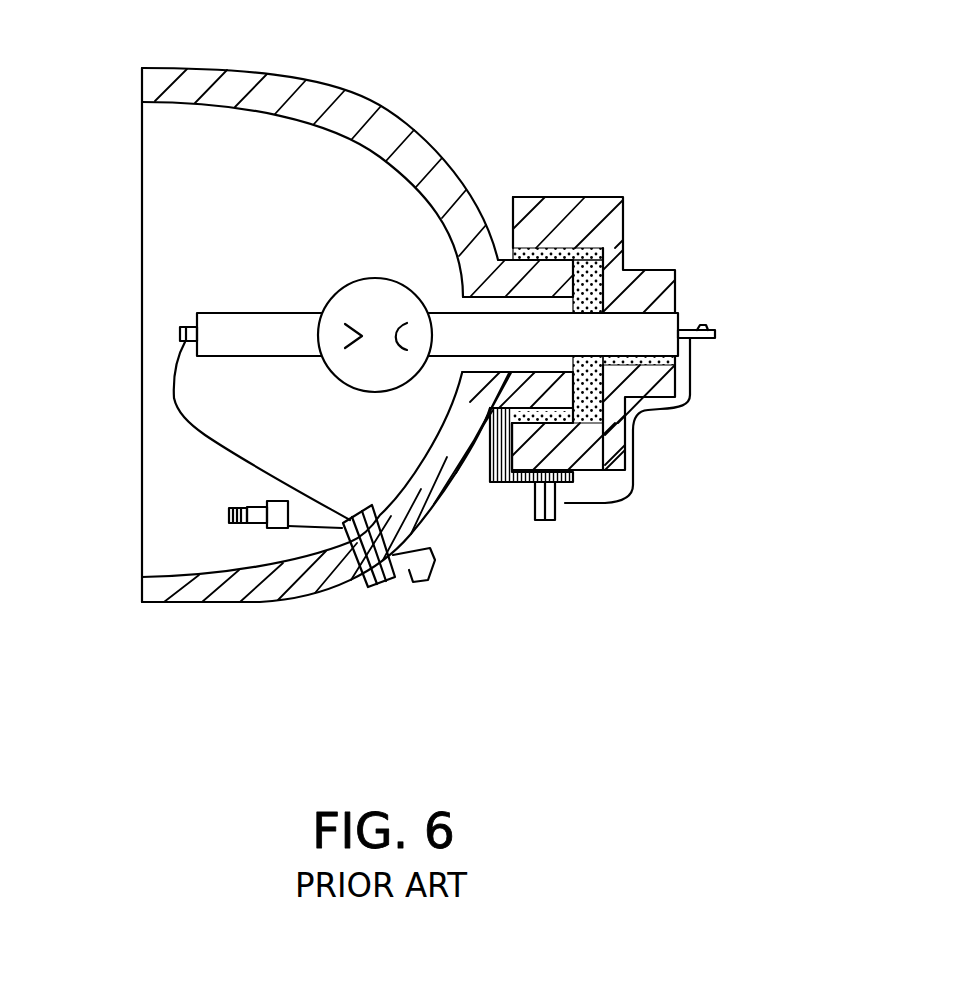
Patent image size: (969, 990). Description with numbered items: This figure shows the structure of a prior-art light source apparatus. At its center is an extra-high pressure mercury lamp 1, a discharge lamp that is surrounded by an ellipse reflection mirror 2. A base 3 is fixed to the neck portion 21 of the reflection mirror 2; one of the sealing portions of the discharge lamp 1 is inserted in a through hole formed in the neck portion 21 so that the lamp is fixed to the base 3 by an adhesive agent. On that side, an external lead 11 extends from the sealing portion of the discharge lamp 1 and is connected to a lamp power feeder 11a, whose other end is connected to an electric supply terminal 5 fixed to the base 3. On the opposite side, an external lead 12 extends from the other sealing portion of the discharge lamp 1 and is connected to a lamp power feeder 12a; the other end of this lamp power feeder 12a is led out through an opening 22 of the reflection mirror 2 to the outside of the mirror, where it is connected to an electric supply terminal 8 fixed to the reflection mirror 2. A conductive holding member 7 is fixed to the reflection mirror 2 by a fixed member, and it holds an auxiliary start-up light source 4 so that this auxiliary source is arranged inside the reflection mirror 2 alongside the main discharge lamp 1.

The extra-high pressure mercury lamp 1 is at (372, 280).
The reflection mirror 2 is at (365, 94).
The base 3 is at (613, 213).
The auxiliary start-up light source 4 is at (253, 507).
The electric supply terminal 5 is at (522, 485).
The conductive holding member 7 is at (270, 598).
The electric supply terminal 8 is at (387, 588).
The external lead 11 is at (720, 334).
The lamp power feeder 11a is at (690, 400).
The external lead 12 is at (180, 324).
The lamp power feeder 12a is at (174, 403).
The neck portion 21 is at (468, 287).
The opening 22 is at (343, 585).